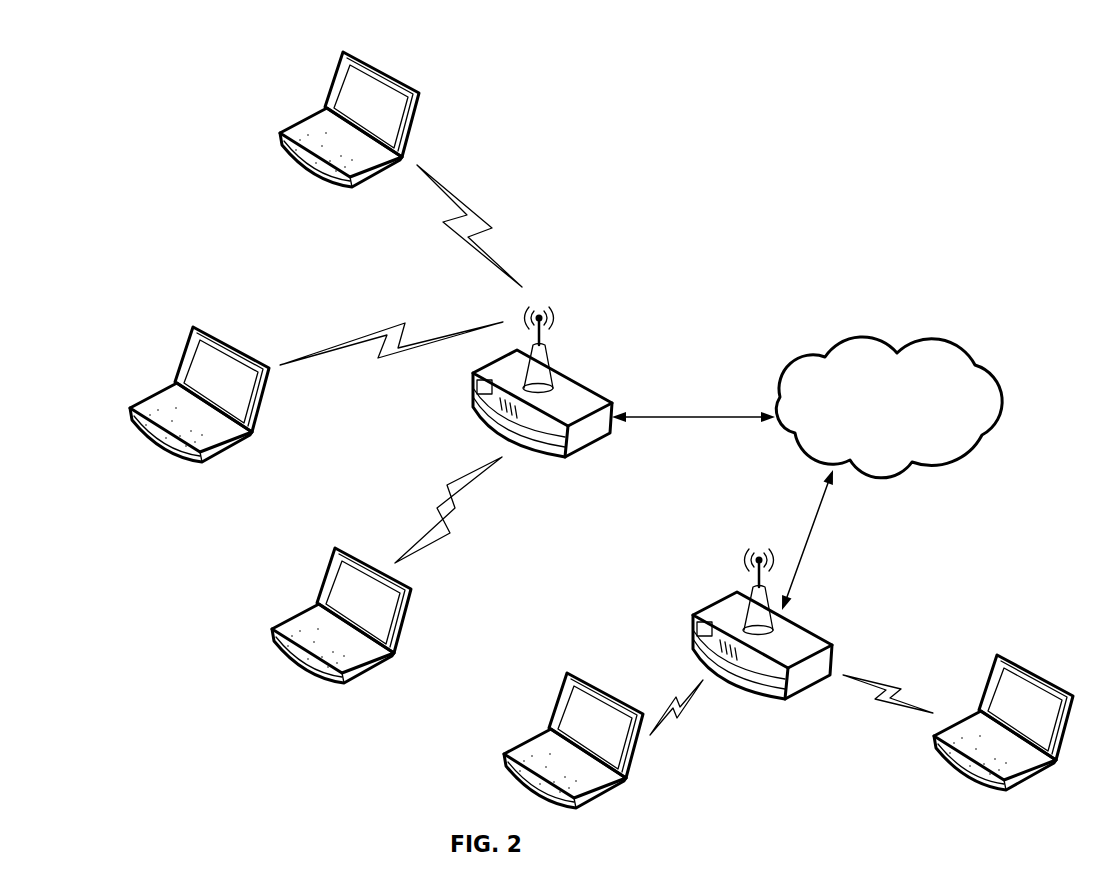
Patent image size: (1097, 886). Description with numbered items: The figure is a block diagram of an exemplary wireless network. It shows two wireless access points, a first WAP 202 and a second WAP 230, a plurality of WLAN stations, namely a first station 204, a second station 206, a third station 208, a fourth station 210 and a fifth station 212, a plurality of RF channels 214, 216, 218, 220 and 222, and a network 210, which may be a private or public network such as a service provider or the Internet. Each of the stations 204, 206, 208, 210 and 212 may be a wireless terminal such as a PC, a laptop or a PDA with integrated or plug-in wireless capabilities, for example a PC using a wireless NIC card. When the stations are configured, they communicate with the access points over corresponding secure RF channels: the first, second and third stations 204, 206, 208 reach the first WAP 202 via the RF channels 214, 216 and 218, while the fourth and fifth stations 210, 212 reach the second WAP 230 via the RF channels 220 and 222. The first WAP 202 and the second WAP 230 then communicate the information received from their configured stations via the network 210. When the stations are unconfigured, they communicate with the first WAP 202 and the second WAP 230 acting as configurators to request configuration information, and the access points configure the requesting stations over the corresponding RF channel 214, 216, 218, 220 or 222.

The wireless access point (WAP) 202 is at (590, 387).
The STA 1 204 is at (335, 68).
The STA 2 206 is at (181, 343).
The STA 3 208 is at (328, 548).
The network (also STA 4) 210 is at (826, 345).
The STA 5 212 is at (986, 660).
The RF channel 214 is at (451, 193).
The RF channel 216 is at (378, 332).
The RF channel 218 is at (434, 505).
The RF channel 220 is at (676, 705).
The RF channel 222 is at (893, 690).
The wireless access point (WAP) 230 is at (824, 638).